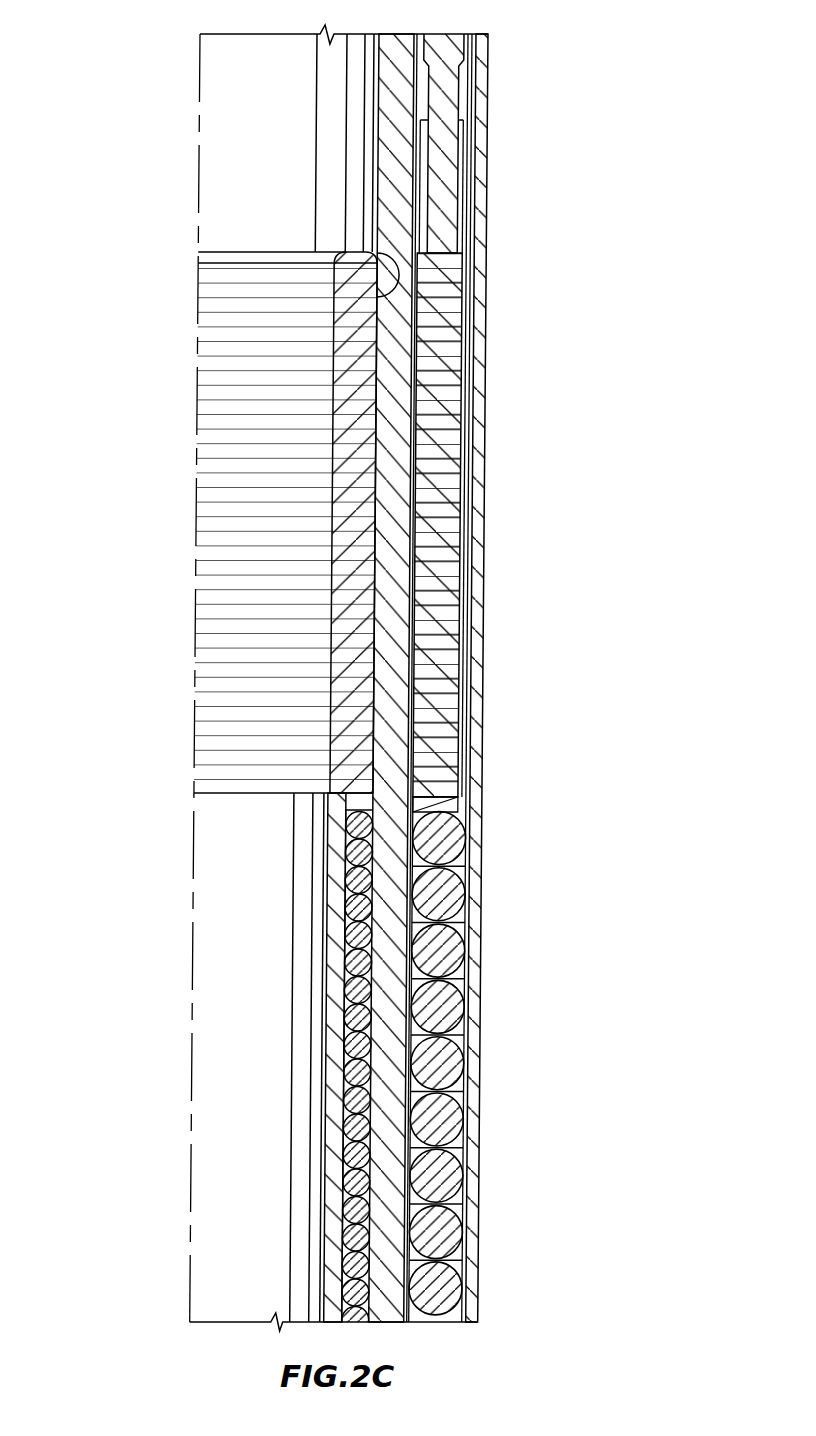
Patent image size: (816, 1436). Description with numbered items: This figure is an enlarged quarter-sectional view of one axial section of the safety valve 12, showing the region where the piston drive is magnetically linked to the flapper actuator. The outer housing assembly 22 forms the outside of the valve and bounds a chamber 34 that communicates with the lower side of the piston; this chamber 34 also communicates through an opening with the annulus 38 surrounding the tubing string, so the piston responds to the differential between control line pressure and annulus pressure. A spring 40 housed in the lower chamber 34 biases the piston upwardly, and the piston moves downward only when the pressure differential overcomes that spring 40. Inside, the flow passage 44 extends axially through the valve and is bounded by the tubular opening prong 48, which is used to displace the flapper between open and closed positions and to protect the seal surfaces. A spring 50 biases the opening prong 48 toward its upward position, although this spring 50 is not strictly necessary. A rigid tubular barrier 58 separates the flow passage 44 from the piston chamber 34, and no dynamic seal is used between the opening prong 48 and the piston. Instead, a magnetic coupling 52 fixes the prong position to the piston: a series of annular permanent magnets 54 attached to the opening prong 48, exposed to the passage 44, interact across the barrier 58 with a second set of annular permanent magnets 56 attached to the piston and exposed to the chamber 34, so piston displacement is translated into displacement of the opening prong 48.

The safety valve 12 is at (636, 89).
The outer housing assembly 22 is at (482, 788).
The chamber 34 is at (480, 912).
The annulus 38 is at (567, 1075).
The spring 40 is at (460, 1157).
The flow passage 44 is at (212, 966).
The tubular opening prong 48 is at (327, 1197).
The spring 50 is at (367, 977).
The magnetic coupling 52 is at (136, 539).
The annular permanent magnets 54 is at (396, 266).
The annular permanent magnets 56 is at (482, 420).
The rigid tubular barrier 58 is at (413, 648).